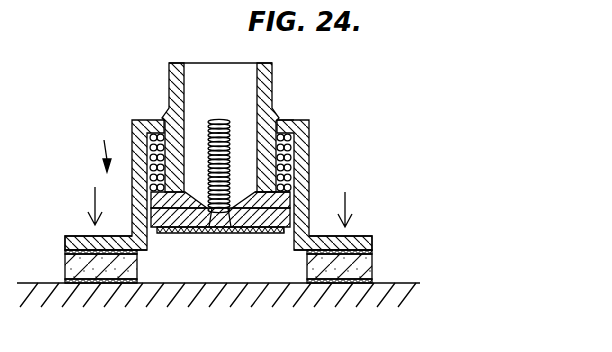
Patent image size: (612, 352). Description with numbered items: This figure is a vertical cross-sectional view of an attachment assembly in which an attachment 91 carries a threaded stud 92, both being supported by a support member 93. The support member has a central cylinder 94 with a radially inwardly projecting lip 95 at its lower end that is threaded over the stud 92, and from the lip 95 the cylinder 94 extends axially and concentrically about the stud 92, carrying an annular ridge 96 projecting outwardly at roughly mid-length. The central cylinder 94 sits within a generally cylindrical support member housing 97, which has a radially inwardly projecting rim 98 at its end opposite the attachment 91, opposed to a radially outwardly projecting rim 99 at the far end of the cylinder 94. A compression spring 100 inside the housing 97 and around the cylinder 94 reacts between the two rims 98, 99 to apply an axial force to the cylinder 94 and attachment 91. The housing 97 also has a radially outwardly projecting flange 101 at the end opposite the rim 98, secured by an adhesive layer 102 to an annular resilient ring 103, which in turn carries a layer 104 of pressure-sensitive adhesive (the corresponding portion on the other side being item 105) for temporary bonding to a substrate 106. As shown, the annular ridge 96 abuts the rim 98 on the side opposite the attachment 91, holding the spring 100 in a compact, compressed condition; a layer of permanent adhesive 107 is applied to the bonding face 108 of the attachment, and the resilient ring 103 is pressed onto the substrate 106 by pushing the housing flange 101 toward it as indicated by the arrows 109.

The attachment 91 is at (263, 232).
The threaded stud 92 is at (217, 119).
The support member 93 is at (104, 140).
The central cylinder 94 is at (264, 79).
The radially inwardly projecting lip 95 is at (207, 193).
The annular ridge 96 is at (277, 118).
The support member housing 97 is at (310, 162).
The radially inwardly projecting rim 98 is at (146, 120).
The radially outwardly projecting rim 99 is at (281, 200).
The compression spring 100 is at (293, 146).
The radially outwardly projecting flange 101 is at (372, 241).
The adhesive layer 102 is at (65, 238).
The annular resilient ring 103 is at (68, 260).
The layer of pressure-sensitive adhesive 104 is at (98, 283).
The support block 105 is at (339, 266).
The substrate 106 is at (380, 292).
The layer of permanent adhesive 107 is at (200, 233).
The bonding face 108 is at (248, 232).
The arrows 109 is at (88, 193).